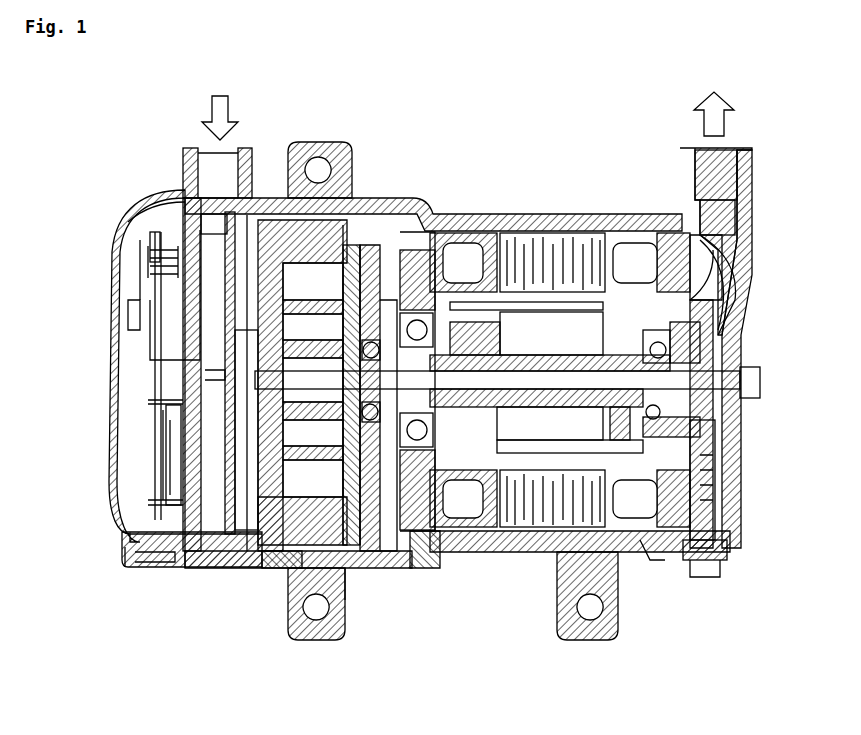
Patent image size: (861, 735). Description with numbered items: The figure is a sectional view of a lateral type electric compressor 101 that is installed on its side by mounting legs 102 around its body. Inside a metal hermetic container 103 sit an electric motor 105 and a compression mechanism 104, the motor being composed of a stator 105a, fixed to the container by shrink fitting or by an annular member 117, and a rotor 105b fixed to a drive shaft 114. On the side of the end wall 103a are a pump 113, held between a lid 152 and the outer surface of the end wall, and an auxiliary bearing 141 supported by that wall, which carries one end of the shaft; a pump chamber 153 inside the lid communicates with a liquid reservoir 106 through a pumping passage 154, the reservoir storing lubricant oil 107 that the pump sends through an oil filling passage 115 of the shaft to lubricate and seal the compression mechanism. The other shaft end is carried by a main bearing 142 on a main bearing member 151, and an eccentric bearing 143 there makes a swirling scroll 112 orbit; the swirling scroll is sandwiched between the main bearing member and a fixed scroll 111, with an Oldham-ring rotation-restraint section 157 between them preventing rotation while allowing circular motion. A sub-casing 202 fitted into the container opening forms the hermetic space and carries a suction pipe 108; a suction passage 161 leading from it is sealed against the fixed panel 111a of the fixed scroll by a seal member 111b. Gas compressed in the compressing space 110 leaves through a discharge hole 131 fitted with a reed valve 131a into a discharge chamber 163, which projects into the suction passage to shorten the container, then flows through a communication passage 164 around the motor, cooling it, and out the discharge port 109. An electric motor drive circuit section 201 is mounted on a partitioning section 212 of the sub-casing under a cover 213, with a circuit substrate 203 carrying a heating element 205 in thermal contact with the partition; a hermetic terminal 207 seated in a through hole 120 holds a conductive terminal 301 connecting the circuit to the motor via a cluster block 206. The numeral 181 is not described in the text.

The electric compressor 101 is at (495, 214).
The mounting legs 102 is at (318, 170).
The hermetic container 103 is at (533, 285).
The end wall 103a is at (750, 267).
The compression mechanism 104 is at (360, 557).
The electric motor 105 is at (532, 556).
The stator 105a is at (525, 562).
The rotor 105b is at (630, 560).
The liquid reservoir 106 is at (727, 563).
The lubricant oil 107 is at (730, 522).
The suction pipe 108 is at (183, 157).
The discharge port 109 is at (753, 157).
The compressing space 110 is at (265, 555).
The fixed scroll 111 is at (283, 198).
The fixed panel 111a is at (200, 288).
The seal member 111b is at (222, 327).
The swirling scroll 112 is at (290, 575).
The pump 113 is at (741, 344).
The drive shaft 114 is at (592, 222).
The oil filling passage 115 is at (627, 553).
The annular member 117 is at (480, 552).
The through hole 120 is at (160, 302).
The discharge hole 131 is at (195, 382).
The reed valve 131a is at (195, 368).
The auxiliary bearing 141 is at (735, 457).
The main bearing 142 is at (458, 222).
The eccentric bearing 143 is at (432, 224).
The main bearing member 151 is at (440, 553).
The lid 152 is at (743, 320).
The pump chamber 153 is at (762, 368).
The pumping passage 154 is at (737, 487).
The rotation-restraint section 157 is at (392, 553).
The suction passage 161 is at (145, 408).
The discharge chamber 163 is at (140, 557).
The communication passage 164 is at (345, 607).
The eccentric bushing 181 is at (352, 202).
The electric motor drive circuit section 201 is at (162, 433).
The sub-casing 202 is at (187, 560).
The circuit substrate 203 is at (165, 463).
The heating element 205 is at (165, 448).
The cluster block 206 is at (150, 193).
The hermetic terminal 207 is at (150, 236).
The partitioning section 212 is at (122, 549).
The cover 213 is at (145, 503).
The conductive terminal 301 is at (150, 240).